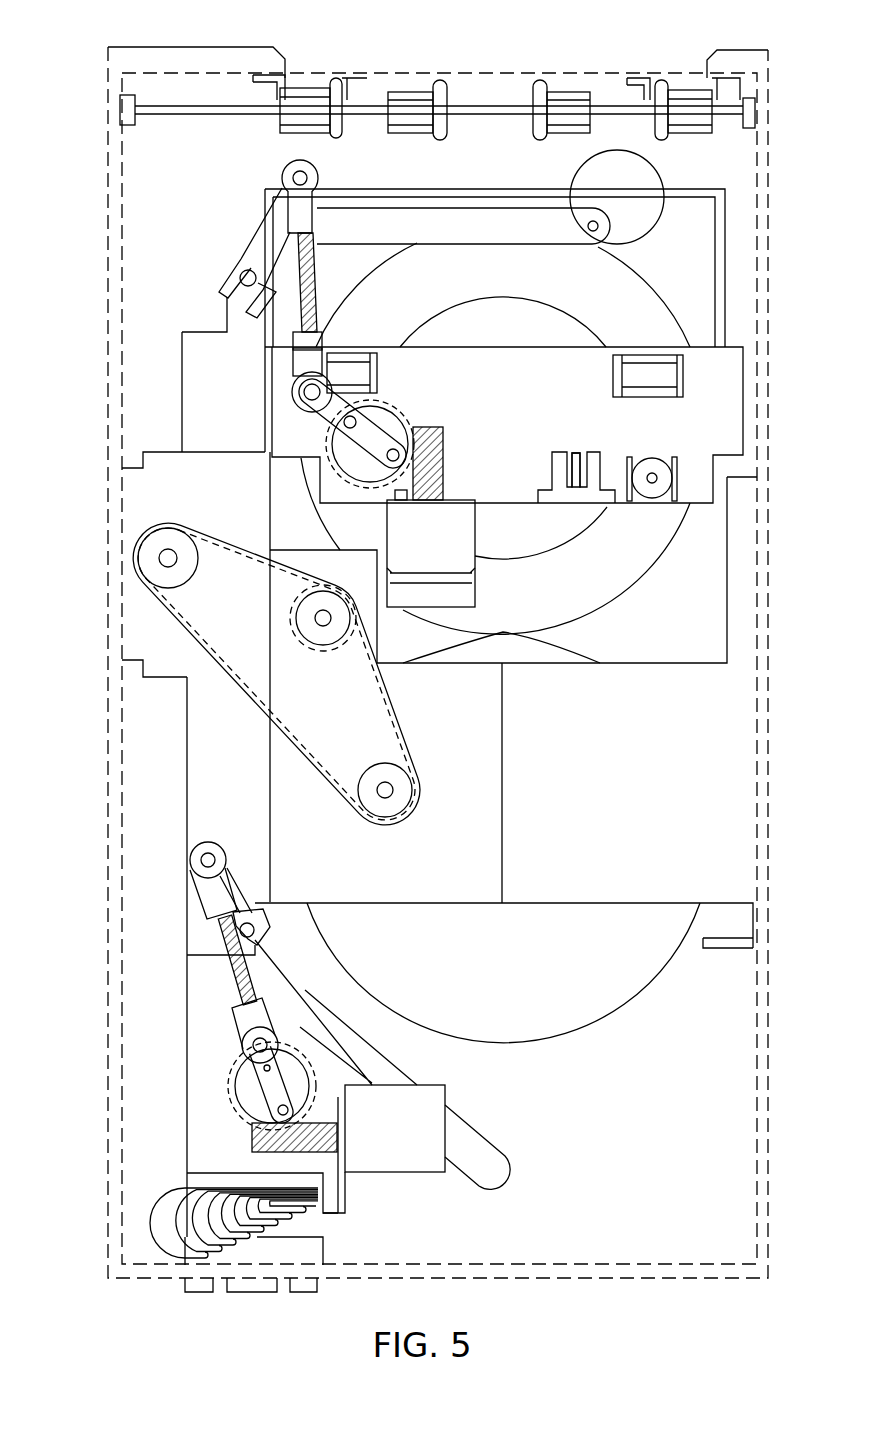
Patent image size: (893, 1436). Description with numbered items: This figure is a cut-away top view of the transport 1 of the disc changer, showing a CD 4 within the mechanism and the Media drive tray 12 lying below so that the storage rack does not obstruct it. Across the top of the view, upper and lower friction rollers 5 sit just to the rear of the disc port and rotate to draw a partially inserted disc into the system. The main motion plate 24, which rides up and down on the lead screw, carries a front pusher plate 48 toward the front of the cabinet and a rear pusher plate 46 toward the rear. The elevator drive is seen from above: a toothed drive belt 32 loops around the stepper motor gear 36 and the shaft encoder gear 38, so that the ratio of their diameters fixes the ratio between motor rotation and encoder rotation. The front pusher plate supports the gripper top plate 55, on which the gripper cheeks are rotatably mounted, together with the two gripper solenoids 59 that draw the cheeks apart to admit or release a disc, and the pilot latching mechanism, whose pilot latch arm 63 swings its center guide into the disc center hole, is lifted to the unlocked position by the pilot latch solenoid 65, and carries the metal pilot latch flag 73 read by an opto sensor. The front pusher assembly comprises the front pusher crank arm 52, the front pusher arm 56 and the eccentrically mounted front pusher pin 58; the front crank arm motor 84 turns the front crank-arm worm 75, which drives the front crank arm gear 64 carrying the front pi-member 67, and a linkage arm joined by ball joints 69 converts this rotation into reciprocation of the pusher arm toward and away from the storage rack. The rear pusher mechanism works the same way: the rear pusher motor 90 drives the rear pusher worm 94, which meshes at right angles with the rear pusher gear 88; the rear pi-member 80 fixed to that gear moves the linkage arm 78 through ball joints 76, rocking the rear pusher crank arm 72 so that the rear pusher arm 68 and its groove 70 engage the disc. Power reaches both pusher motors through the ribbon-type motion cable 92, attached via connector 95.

The apparatus 1 is at (243, 42).
The CD 4 is at (505, 974).
The friction rollers 5 is at (303, 88).
The Media drive tray 12 is at (549, 285).
The main motion plate 24 is at (228, 779).
The toothed drive belt 32 is at (400, 711).
The stepper motor gear 36 is at (319, 637).
The shaft encoder gear 38 is at (400, 786).
The rear pusher plate 46 is at (176, 1012).
The front pusher plate 48 is at (210, 346).
The front pusher crank arm 52 is at (247, 257).
The gripper top plate 55 is at (473, 384).
The front pusher arm 56 is at (498, 238).
The front pusher pin 58 is at (603, 200).
The gripper solenoids 59 is at (353, 348).
The pilot latch arm 63 is at (550, 472).
The front crank arm gear 64 is at (389, 408).
The pilot latch solenoid 65 is at (658, 459).
The front pi-member 67 is at (331, 441).
The rear pusher arm 68 is at (391, 1053).
The ball joints 69 is at (319, 342).
The groove 70 is at (473, 1140).
The rear pusher crank arm 72 is at (238, 886).
The pilot latch flag 73 is at (577, 453).
The front crank-arm worm 75 is at (445, 454).
The ball joints 76 is at (195, 887).
The linkage arm 78 is at (226, 945).
The rear pi-member 80 is at (240, 1083).
The front crank arm motor 84 is at (416, 555).
The rear pusher gear 88 is at (245, 1097).
The rear pusher motor 90 is at (379, 1147).
The motion cable 92 is at (173, 1190).
The rear pusher worm 94 is at (251, 1140).
The connector 95 is at (312, 1208).